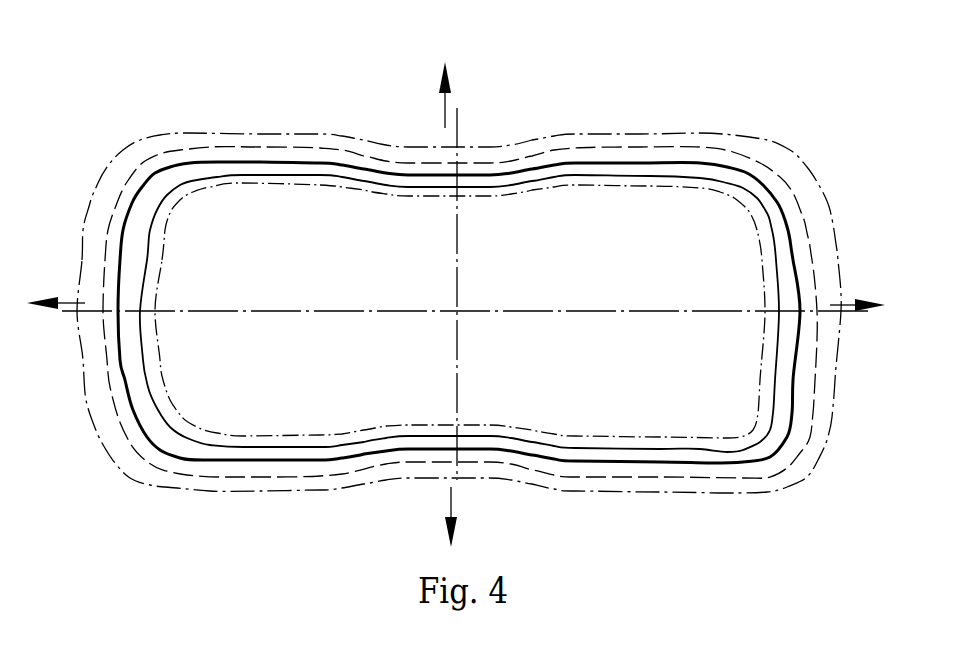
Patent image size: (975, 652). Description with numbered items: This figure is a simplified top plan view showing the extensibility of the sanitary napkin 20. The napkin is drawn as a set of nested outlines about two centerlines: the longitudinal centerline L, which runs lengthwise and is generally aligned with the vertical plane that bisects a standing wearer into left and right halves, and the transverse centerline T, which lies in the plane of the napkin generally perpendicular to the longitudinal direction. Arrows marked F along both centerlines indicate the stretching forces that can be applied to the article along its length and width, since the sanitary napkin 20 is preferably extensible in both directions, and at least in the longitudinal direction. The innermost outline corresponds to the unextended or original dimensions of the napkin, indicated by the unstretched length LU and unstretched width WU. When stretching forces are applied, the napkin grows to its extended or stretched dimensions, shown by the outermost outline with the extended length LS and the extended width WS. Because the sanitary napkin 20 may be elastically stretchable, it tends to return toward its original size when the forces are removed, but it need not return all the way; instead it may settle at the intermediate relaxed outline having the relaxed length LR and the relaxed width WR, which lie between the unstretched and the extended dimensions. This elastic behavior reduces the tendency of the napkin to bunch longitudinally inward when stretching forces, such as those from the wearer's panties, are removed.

The sanitary napkin 20 is at (617, 114).
The force F is at (456, 310).
The longitudinal centerline L is at (213, 309).
The extended width WS is at (472, 145).
The transverse centerline T is at (457, 263).
The extended length LS is at (830, 222).
The contour line LU is at (798, 270).
The relaxed length LR is at (818, 280).
The relaxed width WR is at (362, 468).
The width WU is at (432, 448).